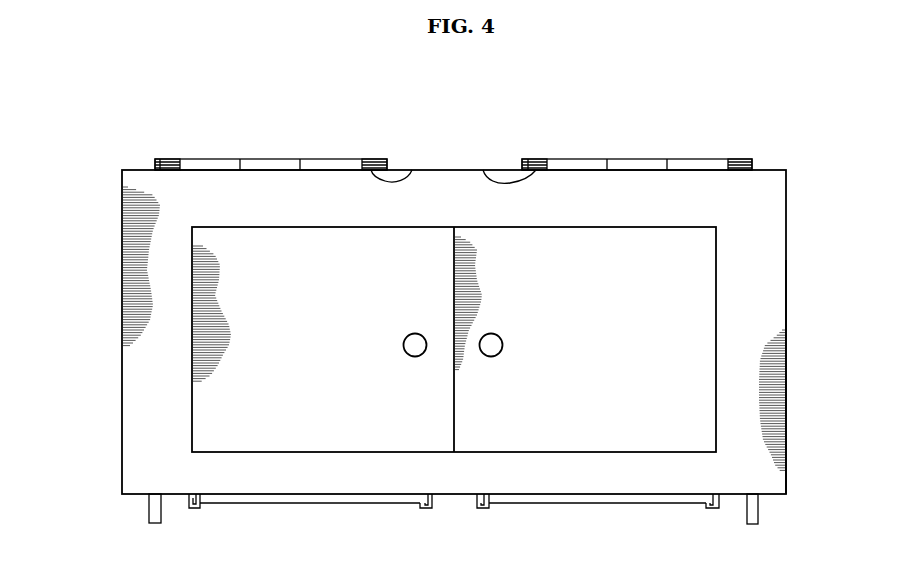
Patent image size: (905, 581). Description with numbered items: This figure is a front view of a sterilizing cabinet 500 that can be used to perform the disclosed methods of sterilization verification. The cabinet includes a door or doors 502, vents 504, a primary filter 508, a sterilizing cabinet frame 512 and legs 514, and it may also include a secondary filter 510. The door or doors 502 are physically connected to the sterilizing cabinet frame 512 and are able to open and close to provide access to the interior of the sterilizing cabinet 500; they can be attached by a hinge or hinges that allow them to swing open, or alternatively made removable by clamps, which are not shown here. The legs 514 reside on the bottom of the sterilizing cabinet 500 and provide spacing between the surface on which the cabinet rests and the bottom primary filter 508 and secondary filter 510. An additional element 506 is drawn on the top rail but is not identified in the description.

The sterilizing cabinet 500 is at (495, 283).
The door or doors 502 is at (217, 385).
The vents 504 is at (483, 170).
The hinge block 506 is at (372, 158).
The primary filter 508 is at (408, 124).
The secondary filter 510 is at (158, 158).
The sterilizing cabinet frame 512 is at (753, 305).
The legs 514 is at (152, 508).